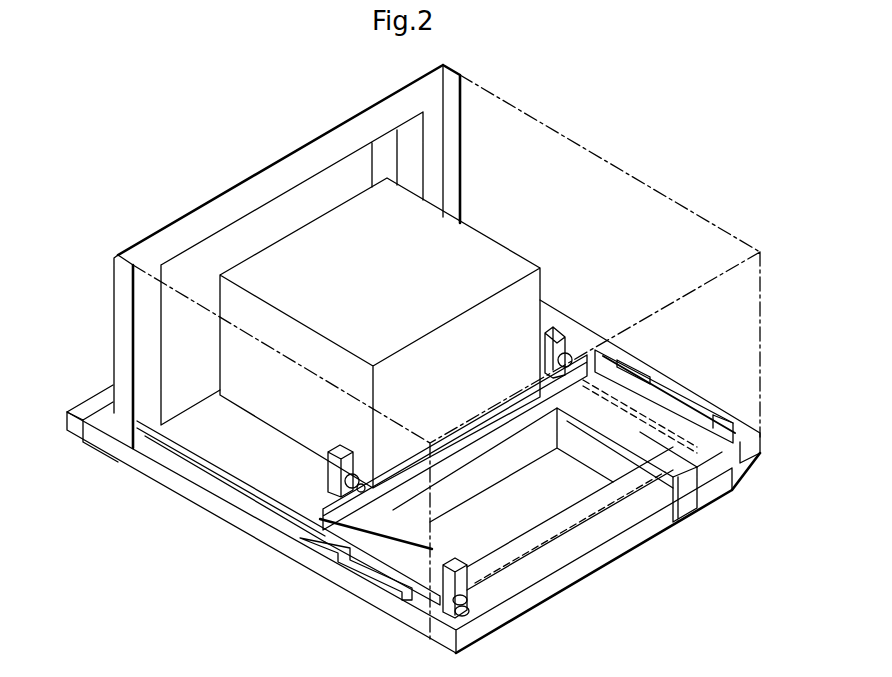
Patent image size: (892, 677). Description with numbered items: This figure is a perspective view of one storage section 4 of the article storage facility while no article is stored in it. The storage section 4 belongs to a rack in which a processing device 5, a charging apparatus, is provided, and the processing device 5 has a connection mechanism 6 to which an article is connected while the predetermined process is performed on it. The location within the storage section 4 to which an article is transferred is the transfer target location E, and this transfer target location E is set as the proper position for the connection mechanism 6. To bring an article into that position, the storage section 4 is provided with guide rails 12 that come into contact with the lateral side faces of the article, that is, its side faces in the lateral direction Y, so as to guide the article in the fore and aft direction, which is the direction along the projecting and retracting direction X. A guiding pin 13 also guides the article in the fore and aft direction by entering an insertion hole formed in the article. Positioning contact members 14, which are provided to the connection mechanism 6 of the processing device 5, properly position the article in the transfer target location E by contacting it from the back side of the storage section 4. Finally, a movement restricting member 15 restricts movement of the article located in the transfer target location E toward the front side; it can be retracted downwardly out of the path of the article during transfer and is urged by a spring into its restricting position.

The storage section 4 is at (702, 335).
The processing device 5 is at (355, 313).
The connection mechanism 6 is at (314, 243).
The guide rails 12 is at (352, 618).
The guiding pin 13 is at (343, 482).
The positioning contact members 14 is at (570, 352).
The movement restricting member 15 is at (465, 582).
The transfer target location E is at (590, 527).
The projecting and retracting direction X is at (148, 525).
The lateral direction Y is at (800, 503).